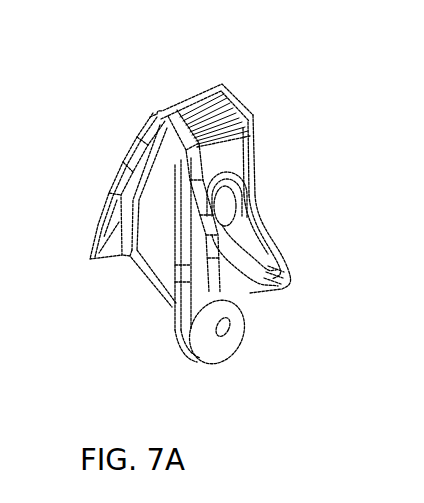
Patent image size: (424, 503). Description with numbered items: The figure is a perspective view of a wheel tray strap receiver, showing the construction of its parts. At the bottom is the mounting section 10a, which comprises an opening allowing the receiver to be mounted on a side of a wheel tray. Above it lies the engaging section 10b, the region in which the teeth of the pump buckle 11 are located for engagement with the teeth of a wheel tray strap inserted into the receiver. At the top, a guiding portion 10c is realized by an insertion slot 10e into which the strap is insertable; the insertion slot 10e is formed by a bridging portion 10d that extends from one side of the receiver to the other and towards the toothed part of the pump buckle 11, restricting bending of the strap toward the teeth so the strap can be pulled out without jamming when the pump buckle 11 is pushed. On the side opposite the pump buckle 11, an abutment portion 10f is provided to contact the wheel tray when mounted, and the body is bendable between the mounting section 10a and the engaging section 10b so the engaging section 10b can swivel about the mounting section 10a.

The mounting section 10a is at (212, 343).
The engaging section 10b is at (257, 197).
The guiding portion 10c is at (255, 110).
The bridging portion 10d is at (187, 105).
The insertion slot 10e is at (226, 121).
The abutment portion 10f is at (289, 280).
The pump buckle 11 is at (110, 192).